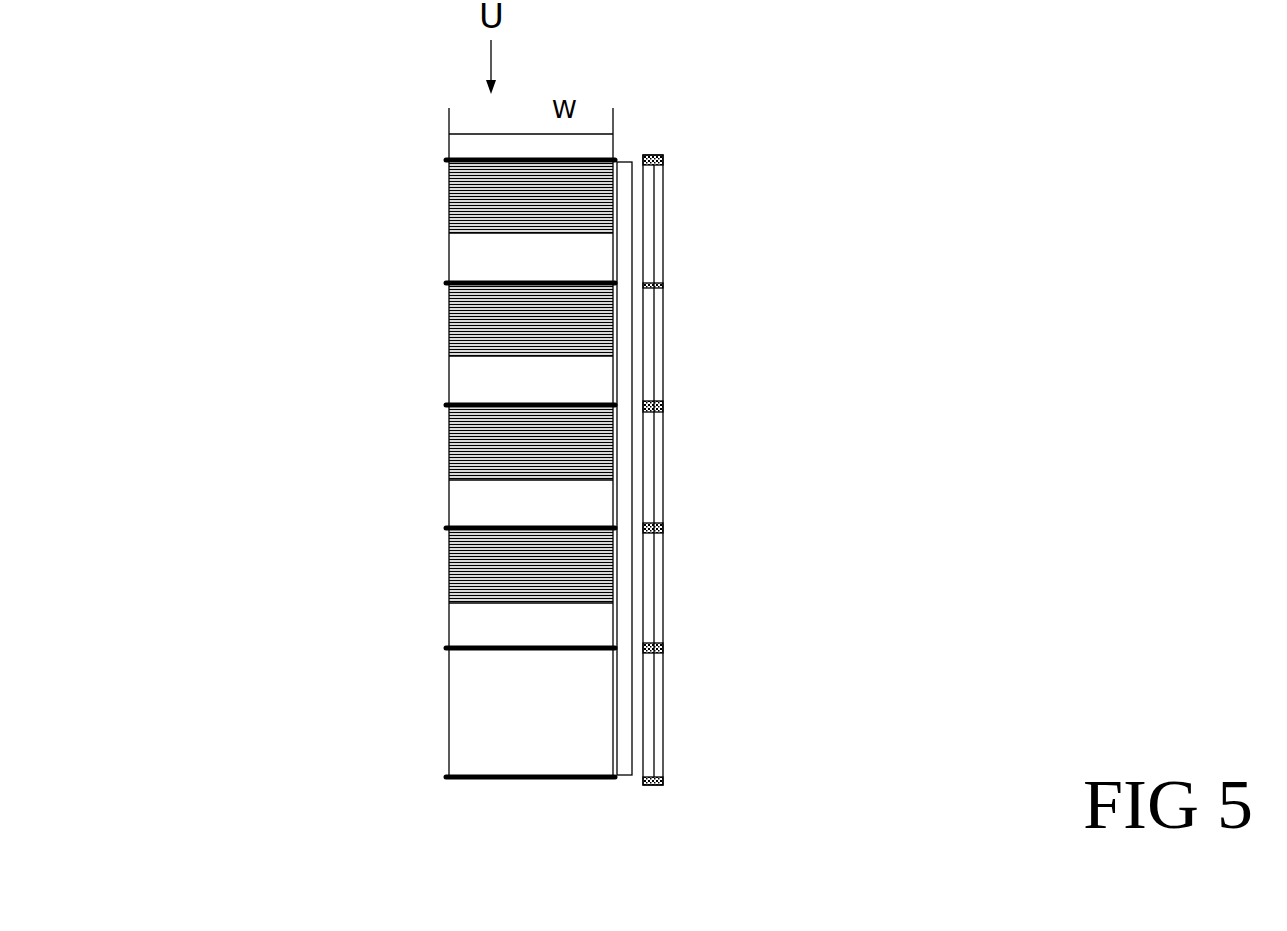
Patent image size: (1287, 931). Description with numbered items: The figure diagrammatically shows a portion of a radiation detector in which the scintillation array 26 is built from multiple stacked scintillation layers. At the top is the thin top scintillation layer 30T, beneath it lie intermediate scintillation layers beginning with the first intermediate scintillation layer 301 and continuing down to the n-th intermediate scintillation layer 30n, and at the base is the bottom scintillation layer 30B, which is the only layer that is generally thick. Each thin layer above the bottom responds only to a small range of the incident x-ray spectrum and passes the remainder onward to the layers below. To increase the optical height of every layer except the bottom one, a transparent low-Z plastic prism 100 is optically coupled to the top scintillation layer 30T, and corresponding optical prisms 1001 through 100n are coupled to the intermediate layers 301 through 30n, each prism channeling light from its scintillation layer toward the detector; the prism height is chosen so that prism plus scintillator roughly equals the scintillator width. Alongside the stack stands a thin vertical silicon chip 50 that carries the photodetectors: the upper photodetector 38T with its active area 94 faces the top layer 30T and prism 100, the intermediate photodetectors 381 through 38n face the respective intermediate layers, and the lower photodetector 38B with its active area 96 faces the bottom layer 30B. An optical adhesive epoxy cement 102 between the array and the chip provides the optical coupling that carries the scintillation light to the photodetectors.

The scintillation array 26 is at (233, 723).
The prism 100 is at (465, 184).
The top scintillation layer 30T is at (465, 253).
The first intermediate optical prism 1001 is at (462, 311).
The first intermediate scintillation layer 301 is at (465, 385).
The n-th intermediate optical prism 100n is at (467, 572).
The n-th intermediate scintillation layer 30n is at (456, 626).
The bottom scintillation layer 30B is at (467, 717).
The optical adhesive epoxy cement 102 is at (625, 755).
The chip 50 is at (653, 154).
The upper photodetector 38T is at (663, 192).
The active area of upper photodetector 94 is at (648, 242).
The first intermediate photodetector 381 is at (663, 342).
The n-th intermediate photodetector 38n is at (663, 591).
The lower photodetector 38B is at (663, 714).
The active area of lower photodetector 96 is at (647, 755).